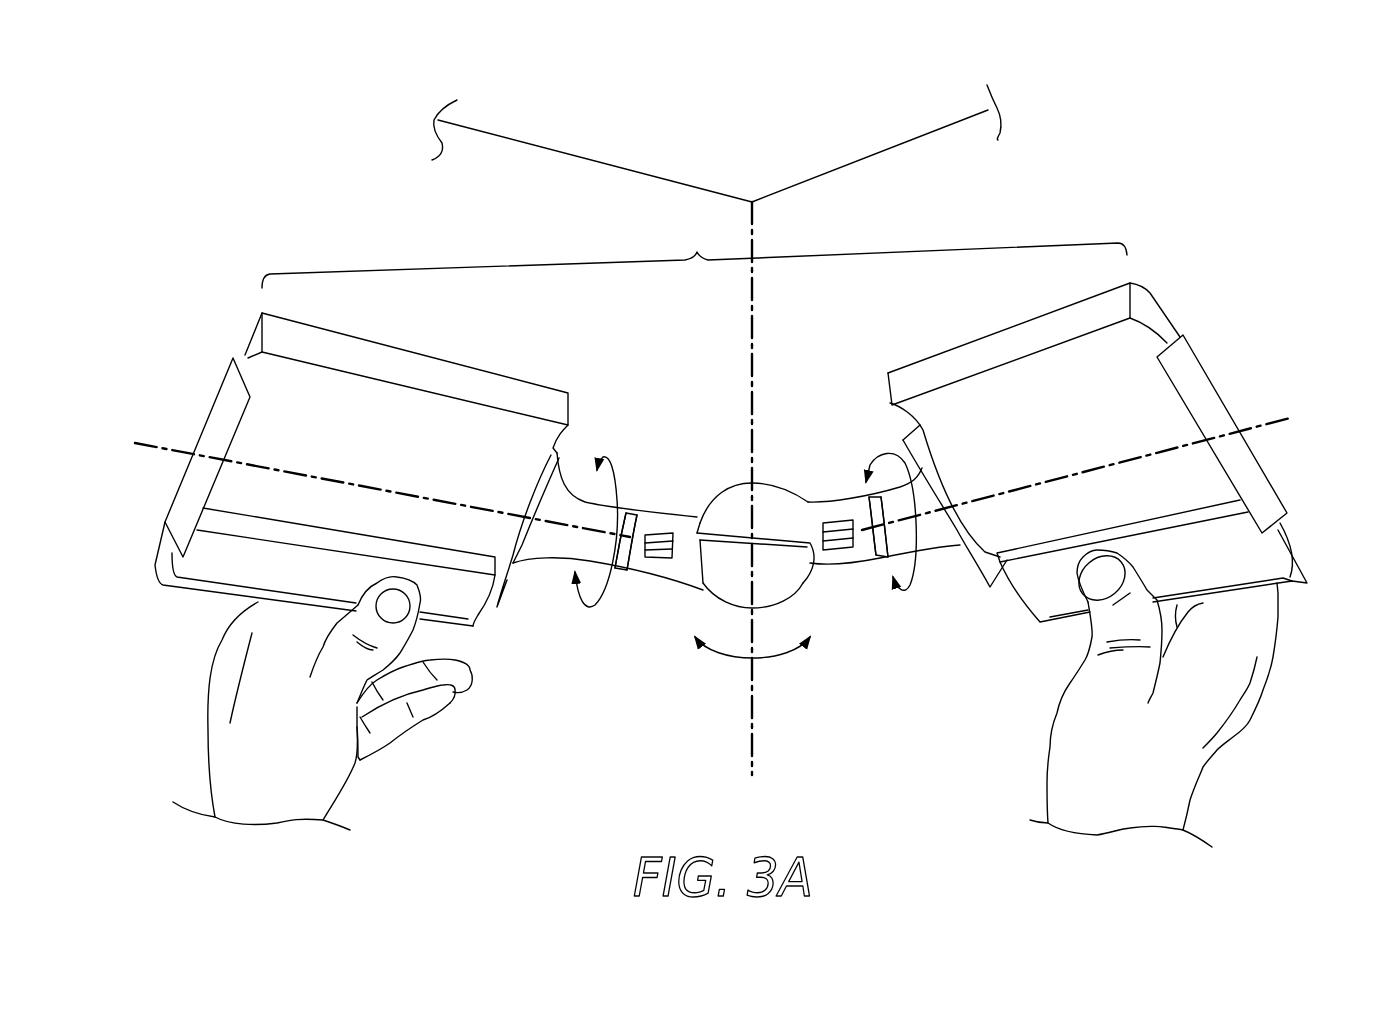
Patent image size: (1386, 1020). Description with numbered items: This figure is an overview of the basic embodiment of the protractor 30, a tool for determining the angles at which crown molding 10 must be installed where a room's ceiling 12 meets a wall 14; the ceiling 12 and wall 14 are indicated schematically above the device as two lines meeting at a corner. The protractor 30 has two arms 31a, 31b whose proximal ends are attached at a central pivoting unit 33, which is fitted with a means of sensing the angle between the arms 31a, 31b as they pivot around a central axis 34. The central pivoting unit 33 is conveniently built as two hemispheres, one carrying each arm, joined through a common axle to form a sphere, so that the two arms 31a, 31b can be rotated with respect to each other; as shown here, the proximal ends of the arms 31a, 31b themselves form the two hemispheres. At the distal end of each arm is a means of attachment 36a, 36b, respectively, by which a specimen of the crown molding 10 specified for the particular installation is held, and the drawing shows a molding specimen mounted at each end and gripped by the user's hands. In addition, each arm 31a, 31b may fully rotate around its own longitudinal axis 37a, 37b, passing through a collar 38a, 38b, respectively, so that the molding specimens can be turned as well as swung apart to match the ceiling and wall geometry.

The crown molding 10 is at (247, 321).
The ceiling 12 is at (565, 129).
The wall 14 is at (617, 168).
The protractor 30 is at (694, 254).
The arm 31a is at (663, 578).
The arm 31b is at (852, 563).
The central pivoting unit 33 is at (776, 472).
The central axis 34 is at (768, 708).
The means of attachment 36a is at (226, 392).
The means of attachment 36b is at (1200, 390).
The longitudinal axis 37a is at (152, 446).
The longitudinal axis 37b is at (1290, 418).
The collar 38a is at (634, 512).
The collar 38b is at (862, 510).